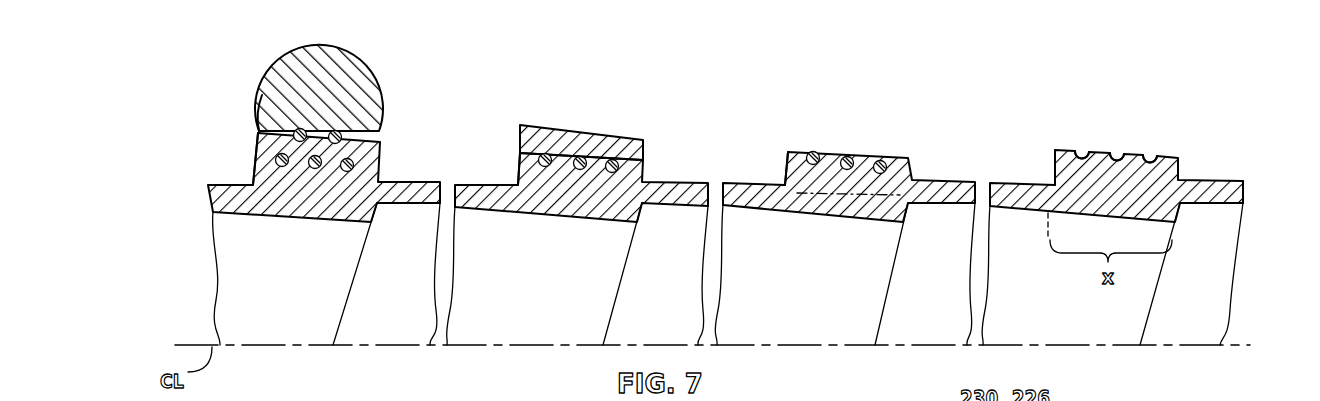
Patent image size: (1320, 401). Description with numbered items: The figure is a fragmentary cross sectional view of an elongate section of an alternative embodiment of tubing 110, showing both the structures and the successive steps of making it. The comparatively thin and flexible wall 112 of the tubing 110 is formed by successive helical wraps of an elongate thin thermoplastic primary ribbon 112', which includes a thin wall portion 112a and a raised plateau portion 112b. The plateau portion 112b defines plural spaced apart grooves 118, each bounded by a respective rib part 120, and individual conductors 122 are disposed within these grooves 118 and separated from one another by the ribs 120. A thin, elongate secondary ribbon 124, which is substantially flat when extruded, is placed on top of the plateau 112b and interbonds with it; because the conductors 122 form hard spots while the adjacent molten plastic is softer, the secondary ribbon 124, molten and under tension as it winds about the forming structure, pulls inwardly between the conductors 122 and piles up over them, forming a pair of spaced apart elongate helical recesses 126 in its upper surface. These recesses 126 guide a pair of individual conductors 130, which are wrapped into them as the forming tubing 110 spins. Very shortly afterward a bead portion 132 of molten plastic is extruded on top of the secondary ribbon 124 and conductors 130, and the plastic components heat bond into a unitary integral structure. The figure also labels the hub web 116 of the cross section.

The tubing 110 is at (719, 93).
The wall 112 is at (334, 177).
The primary ribbon 112' is at (993, 169).
The thin wall portion 112a is at (1243, 197).
The plateau portion 112b is at (257, 153).
The hub web 116 is at (277, 230).
The grooves 118 is at (1140, 157).
The rib part 120 is at (1073, 150).
The conductors 122 is at (347, 172).
The secondary ribbon 124 is at (335, 160).
The recesses 126 is at (282, 125).
The conductors 130 is at (309, 75).
The bead portion 132 is at (263, 107).